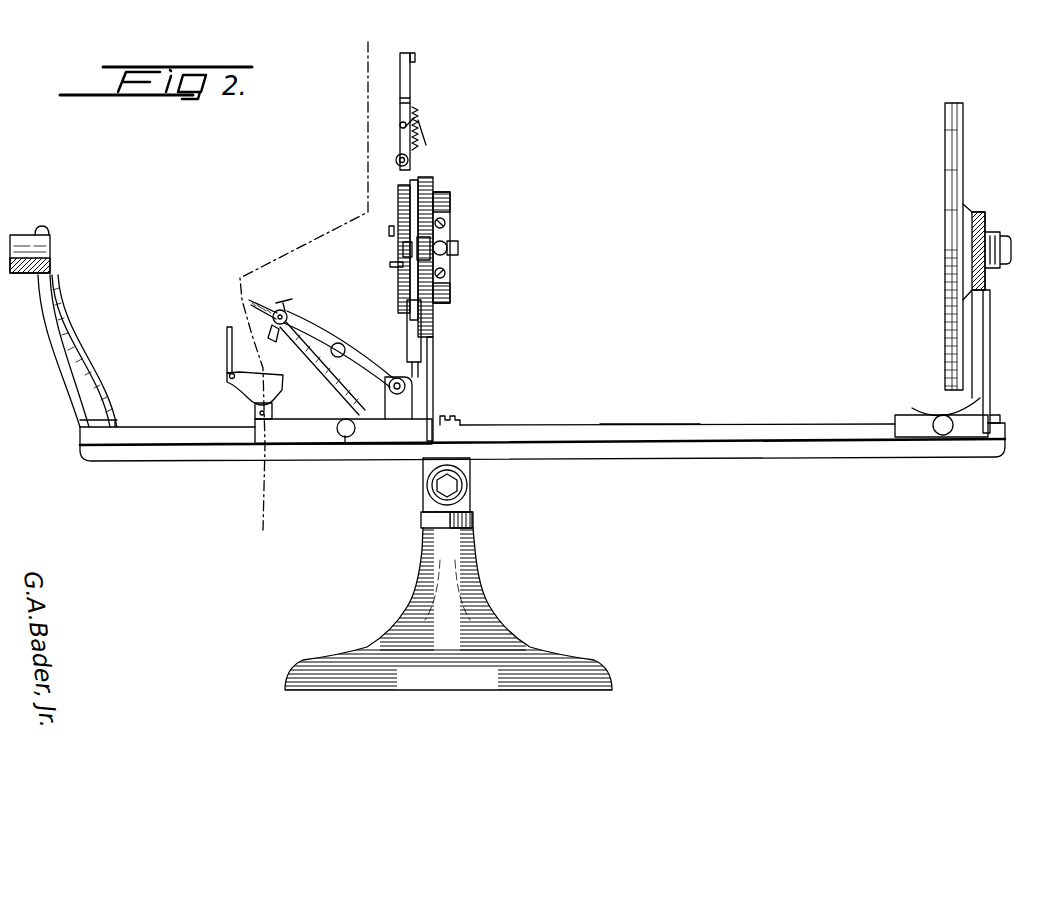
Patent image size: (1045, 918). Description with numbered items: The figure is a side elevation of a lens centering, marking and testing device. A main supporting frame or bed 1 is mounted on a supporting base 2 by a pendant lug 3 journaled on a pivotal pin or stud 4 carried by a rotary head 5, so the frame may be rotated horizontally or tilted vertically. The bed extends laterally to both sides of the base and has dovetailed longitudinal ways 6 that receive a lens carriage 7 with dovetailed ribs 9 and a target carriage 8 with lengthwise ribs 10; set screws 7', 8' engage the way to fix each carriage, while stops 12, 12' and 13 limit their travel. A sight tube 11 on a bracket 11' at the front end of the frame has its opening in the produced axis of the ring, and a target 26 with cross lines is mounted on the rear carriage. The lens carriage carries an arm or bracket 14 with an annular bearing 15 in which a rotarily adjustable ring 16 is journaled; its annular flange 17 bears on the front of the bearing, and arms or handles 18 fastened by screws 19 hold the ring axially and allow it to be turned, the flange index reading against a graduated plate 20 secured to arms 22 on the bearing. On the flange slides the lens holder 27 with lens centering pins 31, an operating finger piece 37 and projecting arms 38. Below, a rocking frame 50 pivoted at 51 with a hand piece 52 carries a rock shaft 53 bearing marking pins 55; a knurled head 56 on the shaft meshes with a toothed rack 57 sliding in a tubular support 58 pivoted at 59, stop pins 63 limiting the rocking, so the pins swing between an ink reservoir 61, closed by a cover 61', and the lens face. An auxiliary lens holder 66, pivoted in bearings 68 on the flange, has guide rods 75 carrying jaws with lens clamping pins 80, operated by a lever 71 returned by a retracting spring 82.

The main supporting frame or bed 1 is at (576, 441).
The supporting base 2 is at (480, 570).
The pendant lug 3 is at (408, 478).
The pivotal pin or stud 4 is at (457, 485).
The rotary head 5 is at (474, 513).
The longitudinal ways 6 is at (655, 428).
The carriage 7 is at (424, 402).
The set screw 7' is at (335, 462).
The carriage 8 is at (938, 397).
The set screw 8' is at (937, 451).
The dovetailed ribs 9 is at (300, 446).
The lengthwise ribs 10 is at (905, 440).
The sight tube 11 is at (50, 249).
The bracket 11' is at (88, 351).
The stop 12 is at (470, 409).
The stop 12' is at (997, 318).
The stop 13 is at (117, 423).
The arm or bracket 14 is at (433, 345).
The annular bearing 15 is at (430, 182).
The rotarily adjustable ring 16 is at (448, 203).
The annular flange 17 is at (412, 183).
The arms or handles 18 is at (459, 248).
The screws 19 is at (456, 276).
The graduated plate 20 is at (422, 334).
The arms 22 is at (420, 255).
The target 26 is at (945, 233).
The lens holder 27 is at (398, 197).
The lens centering pins 31 is at (403, 250).
The operating member or finger piece 37 is at (392, 265).
The arms 38 is at (389, 230).
The rocking frame 50 is at (362, 352).
The pivot 51 is at (389, 386).
The hand piece 52 is at (346, 336).
The rock shaft or spindle 53 is at (288, 315).
The marking pins 55 is at (270, 343).
The gear or knurled head 56 is at (291, 290).
The toothed rack 57 is at (250, 304).
The tubular support 58 is at (330, 396).
The pivot 59 is at (356, 425).
The ink reservoir 61 is at (249, 395).
The cover 61' is at (214, 350).
The stop pins 63 is at (320, 336).
The auxiliary lens holder 66 is at (407, 80).
The bearings 68 is at (396, 160).
The lever 71 is at (420, 135).
The guide rods 75 is at (400, 125).
The lens clamping pins 80 is at (415, 56).
The retracting spring 82 is at (412, 153).